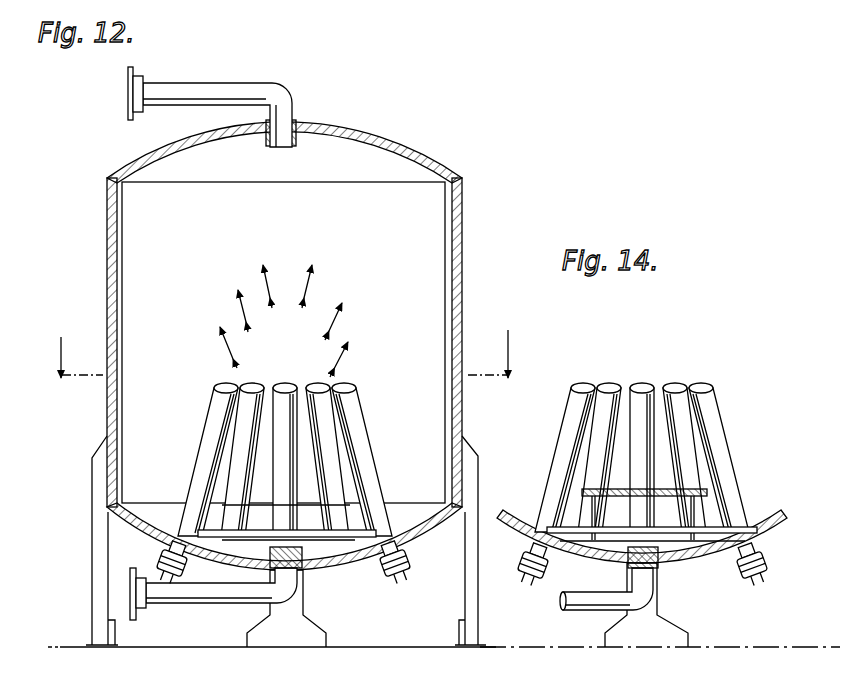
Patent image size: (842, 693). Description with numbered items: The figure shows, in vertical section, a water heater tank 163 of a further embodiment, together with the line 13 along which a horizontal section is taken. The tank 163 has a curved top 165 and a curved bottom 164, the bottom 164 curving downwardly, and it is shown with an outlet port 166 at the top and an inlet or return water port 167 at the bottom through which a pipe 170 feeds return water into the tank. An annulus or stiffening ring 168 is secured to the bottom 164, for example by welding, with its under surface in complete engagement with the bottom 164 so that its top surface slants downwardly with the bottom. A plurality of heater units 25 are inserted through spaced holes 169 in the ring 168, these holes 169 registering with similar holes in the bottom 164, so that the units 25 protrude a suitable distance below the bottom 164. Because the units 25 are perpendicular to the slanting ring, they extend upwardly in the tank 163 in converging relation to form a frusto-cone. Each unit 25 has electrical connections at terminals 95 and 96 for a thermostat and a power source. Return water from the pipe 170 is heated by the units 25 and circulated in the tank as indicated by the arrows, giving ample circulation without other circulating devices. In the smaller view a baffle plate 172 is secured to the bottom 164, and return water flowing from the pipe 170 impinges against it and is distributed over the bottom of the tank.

In FIG. 12, the section line of FIG. 13 is at (283, 358).
In FIG. 12, the heater unit 25 is at (318, 381).
In FIG. 14, the heater unit 25 is at (677, 381).
In FIG. 12, the terminal 95 is at (387, 581).
In FIG. 14, the terminal 95 is at (748, 586).
In FIG. 12, the second terminal 96 is at (405, 583).
In FIG. 14, the second terminal 96 is at (758, 589).
In FIG. 12, the tank 163 is at (103, 245).
In FIG. 12, the curved bottom 164 is at (145, 542).
In FIG. 14, the curved bottom 164 is at (787, 526).
In FIG. 12, the curved top 165 is at (385, 146).
In FIG. 12, the outlet port 166 is at (281, 150).
In FIG. 12, the inlet or return water port 167 is at (306, 567).
In FIG. 14, the inlet or return water port 167 is at (666, 559).
In FIG. 12, the stiffening ring 168 is at (318, 544).
In FIG. 14, the stiffening ring 168 is at (622, 534).
In FIG. 12, the holes 169 is at (345, 536).
In FIG. 12, the pipe 170 is at (212, 597).
In FIG. 14, the pipe 170 is at (598, 600).
In FIG. 14, the baffle plate 172 is at (620, 490).